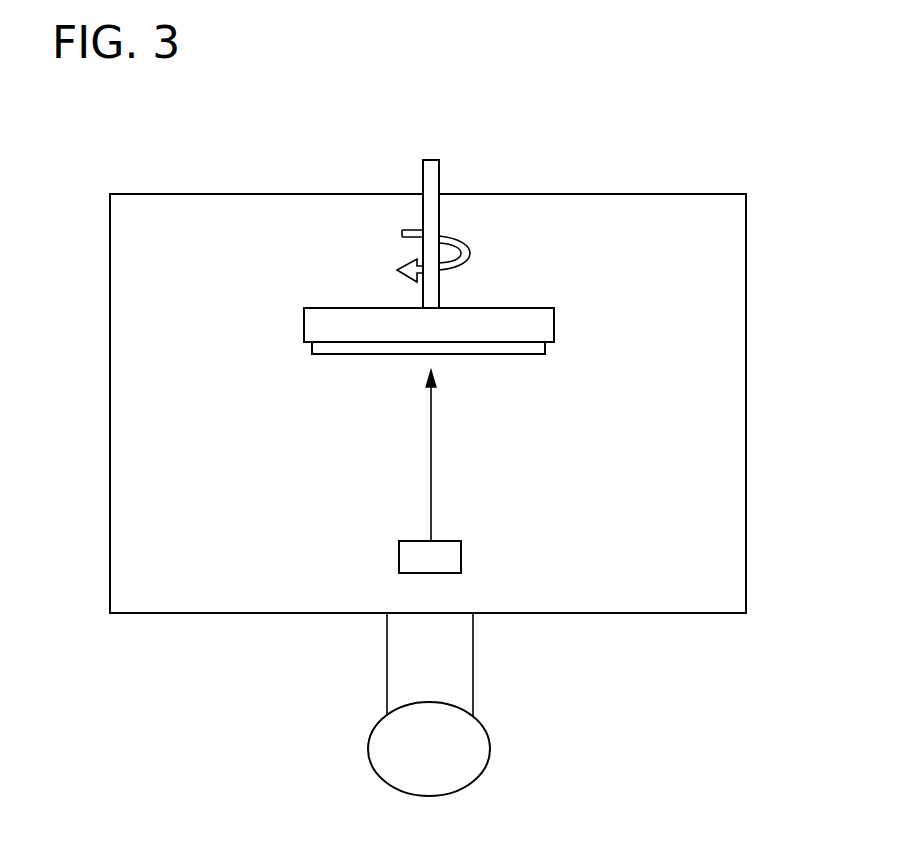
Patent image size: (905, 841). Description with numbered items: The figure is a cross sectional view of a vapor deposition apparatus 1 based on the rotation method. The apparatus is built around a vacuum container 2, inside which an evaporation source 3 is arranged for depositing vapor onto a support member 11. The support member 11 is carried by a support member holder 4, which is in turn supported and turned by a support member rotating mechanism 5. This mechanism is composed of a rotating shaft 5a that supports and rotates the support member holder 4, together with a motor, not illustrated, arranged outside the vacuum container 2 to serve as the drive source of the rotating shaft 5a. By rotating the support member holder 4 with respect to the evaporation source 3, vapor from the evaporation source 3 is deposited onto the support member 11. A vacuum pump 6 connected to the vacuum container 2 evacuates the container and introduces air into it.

The vapor deposition apparatus 1 is at (516, 125).
The vacuum container 2 is at (746, 318).
The evaporation source 3 is at (461, 558).
The support member holder 4 is at (538, 307).
The support member rotating mechanism 5 is at (443, 212).
The rotating shaft 5a is at (432, 212).
The vacuum pump 6 is at (490, 750).
The support member 11 is at (540, 348).